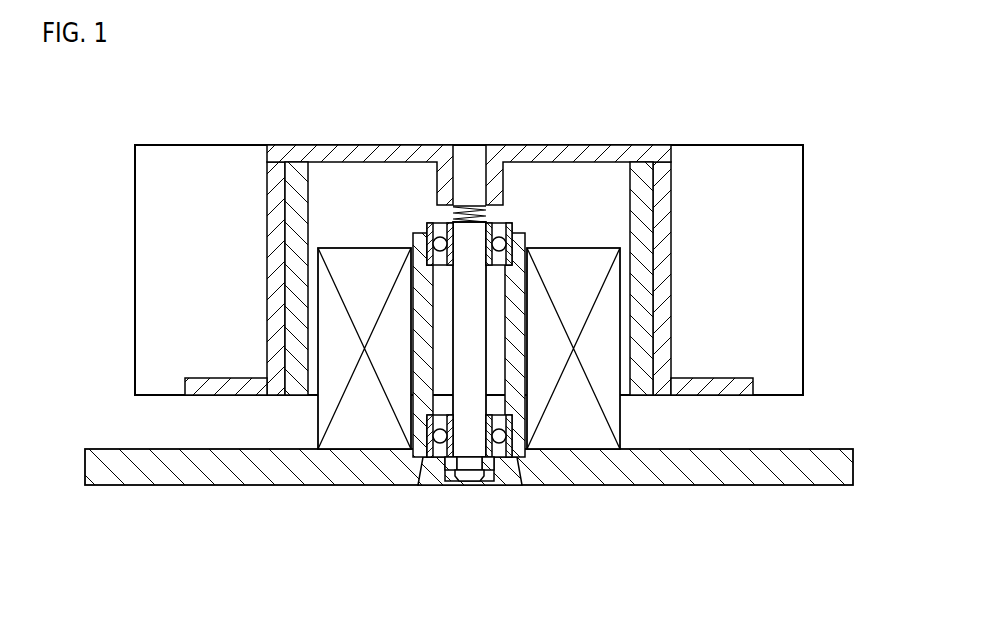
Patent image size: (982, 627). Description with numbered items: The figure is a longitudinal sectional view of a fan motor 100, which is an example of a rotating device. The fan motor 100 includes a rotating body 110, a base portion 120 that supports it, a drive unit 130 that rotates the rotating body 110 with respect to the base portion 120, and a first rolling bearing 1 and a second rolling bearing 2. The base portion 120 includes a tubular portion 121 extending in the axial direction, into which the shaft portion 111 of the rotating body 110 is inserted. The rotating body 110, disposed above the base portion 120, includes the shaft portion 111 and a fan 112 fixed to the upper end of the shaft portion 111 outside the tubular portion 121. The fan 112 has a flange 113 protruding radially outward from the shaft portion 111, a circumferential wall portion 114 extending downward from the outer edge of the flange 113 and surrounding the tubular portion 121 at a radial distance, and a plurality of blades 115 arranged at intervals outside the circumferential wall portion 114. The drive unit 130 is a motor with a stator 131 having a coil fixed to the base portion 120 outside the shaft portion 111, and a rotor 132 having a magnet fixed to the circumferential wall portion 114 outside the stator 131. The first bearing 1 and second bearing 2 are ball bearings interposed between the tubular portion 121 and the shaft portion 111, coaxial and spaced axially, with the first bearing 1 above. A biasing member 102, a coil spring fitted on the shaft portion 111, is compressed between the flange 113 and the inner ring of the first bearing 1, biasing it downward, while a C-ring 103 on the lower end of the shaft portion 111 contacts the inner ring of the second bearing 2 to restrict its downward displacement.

The fan motor 100 is at (757, 97).
The first rolling bearing 1 is at (438, 319).
The second rolling bearing 2 is at (437, 467).
The biasing member 102 is at (468, 206).
The C-ring 103 is at (492, 482).
The rotating body 110 is at (406, 216).
The shaft portion 111 is at (468, 237).
The fan 112 is at (297, 143).
The flange 113 is at (385, 152).
The circumferential wall portion 114 is at (273, 282).
The blades 115 is at (155, 215).
The base portion 120 is at (256, 487).
The tubular portion 121 is at (420, 378).
The drive unit 130 is at (479, 422).
The stator 131 is at (567, 433).
The rotor 132 is at (640, 340).